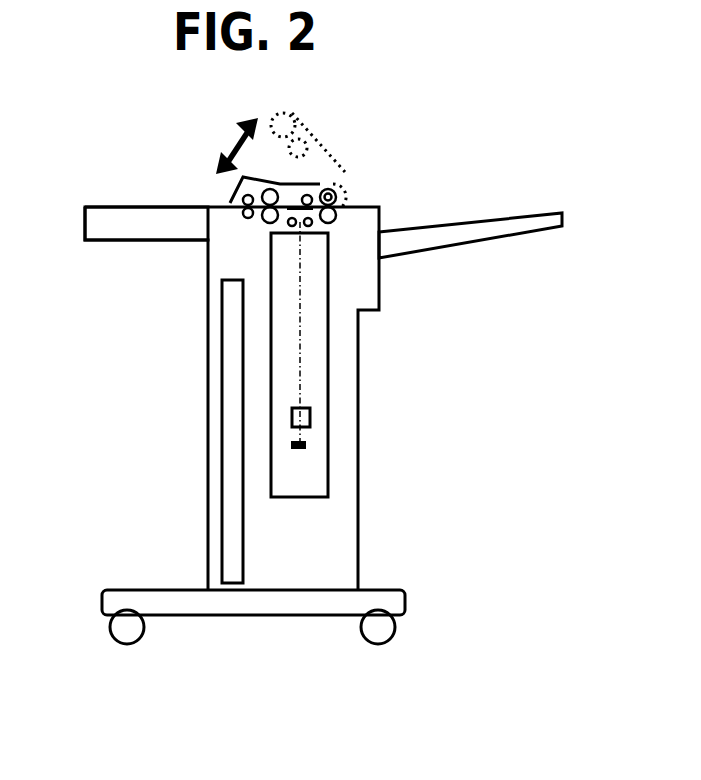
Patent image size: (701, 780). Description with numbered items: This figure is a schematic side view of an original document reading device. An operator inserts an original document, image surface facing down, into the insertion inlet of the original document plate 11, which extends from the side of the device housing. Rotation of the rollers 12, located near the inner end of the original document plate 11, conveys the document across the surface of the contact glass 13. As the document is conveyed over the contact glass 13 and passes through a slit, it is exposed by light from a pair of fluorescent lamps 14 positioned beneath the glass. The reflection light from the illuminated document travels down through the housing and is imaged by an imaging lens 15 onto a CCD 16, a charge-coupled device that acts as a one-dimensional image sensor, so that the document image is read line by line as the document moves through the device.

The original document plate 11 is at (122, 207).
The rollers 12 is at (270, 224).
The contact glass 13 is at (293, 203).
The pair of fluorescent lamps 14 is at (291, 226).
The imaging lens 15 is at (310, 412).
The CCD 16 is at (305, 445).